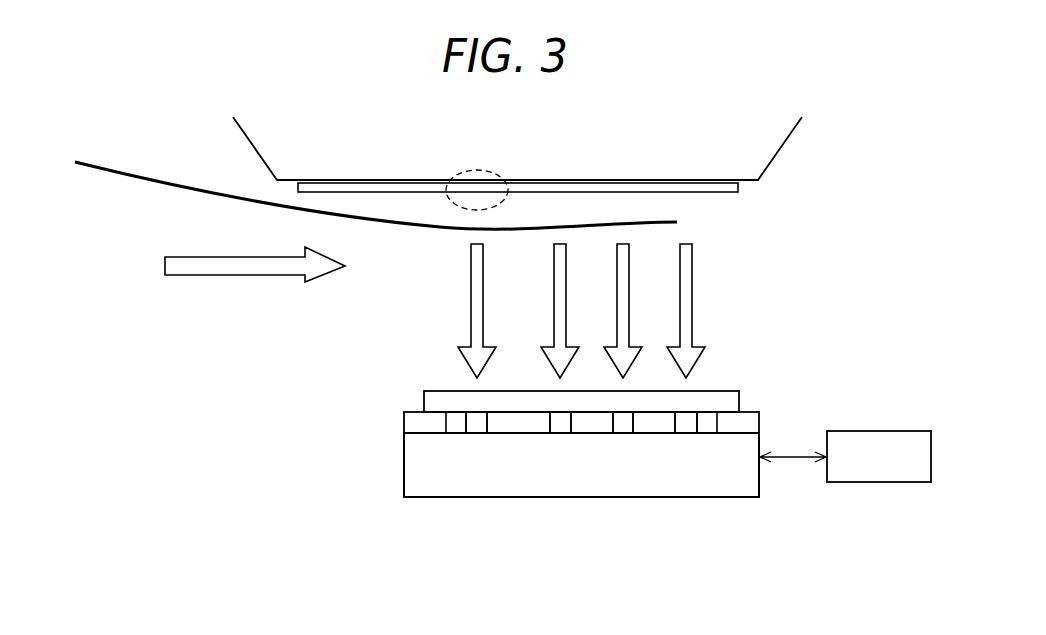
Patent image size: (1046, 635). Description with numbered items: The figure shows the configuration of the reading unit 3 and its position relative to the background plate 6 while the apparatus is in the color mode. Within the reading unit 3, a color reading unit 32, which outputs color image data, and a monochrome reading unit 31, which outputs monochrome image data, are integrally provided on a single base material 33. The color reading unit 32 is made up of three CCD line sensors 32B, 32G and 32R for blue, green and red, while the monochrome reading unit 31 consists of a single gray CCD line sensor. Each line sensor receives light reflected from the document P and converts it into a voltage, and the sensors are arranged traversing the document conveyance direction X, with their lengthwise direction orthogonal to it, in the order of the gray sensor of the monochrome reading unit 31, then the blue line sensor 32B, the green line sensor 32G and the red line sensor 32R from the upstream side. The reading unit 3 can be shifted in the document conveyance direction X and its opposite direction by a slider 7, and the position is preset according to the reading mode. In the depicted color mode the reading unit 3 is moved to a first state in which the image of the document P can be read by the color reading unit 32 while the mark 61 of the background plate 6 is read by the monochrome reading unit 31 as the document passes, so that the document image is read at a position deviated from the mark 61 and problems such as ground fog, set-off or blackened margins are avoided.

The reading unit 3 is at (404, 443).
The background plate 6 is at (628, 186).
The mark 61 is at (477, 171).
The slider 7 is at (866, 431).
The monochrome reading unit 31 is at (477, 425).
The color reading unit 32 is at (632, 500).
The B (blue) line sensor 32B is at (560, 428).
The G (green) line sensor 32G is at (625, 428).
The R (red) line sensor 32R is at (694, 480).
The base material 33 is at (422, 479).
The document P is at (638, 223).
The document conveyance direction X is at (225, 262).